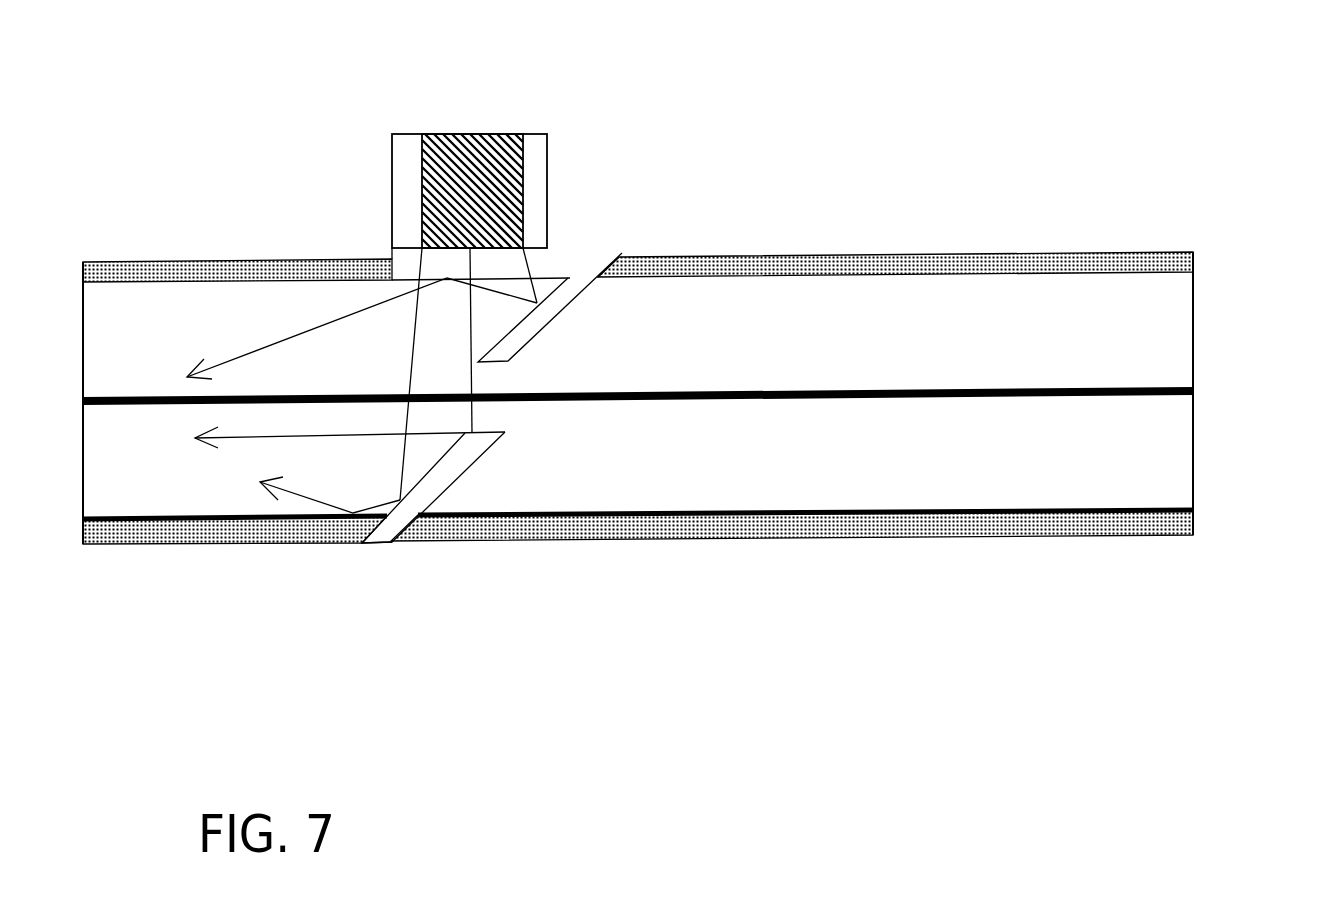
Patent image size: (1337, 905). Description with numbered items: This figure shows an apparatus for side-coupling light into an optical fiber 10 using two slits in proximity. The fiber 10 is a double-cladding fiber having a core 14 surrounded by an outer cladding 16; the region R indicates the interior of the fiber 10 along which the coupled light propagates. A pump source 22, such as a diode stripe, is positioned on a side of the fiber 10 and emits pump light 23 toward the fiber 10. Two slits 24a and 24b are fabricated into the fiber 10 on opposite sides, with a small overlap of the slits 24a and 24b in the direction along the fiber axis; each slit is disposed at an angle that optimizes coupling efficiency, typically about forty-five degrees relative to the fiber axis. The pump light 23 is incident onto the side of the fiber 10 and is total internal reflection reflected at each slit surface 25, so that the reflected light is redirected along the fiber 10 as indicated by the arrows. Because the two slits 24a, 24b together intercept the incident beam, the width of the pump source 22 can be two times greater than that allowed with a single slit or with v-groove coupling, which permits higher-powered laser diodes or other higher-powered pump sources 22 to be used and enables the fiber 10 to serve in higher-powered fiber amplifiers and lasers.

The fiber 10 is at (110, 220).
The core 14 is at (1180, 393).
The outer cladding 16 is at (1193, 256).
The channel region R is at (1180, 317).
The pump source 22 is at (547, 177).
The pump light 23 is at (408, 265).
The slit 24a is at (367, 565).
The slit 24b is at (612, 232).
The slit surface 25 is at (522, 325).